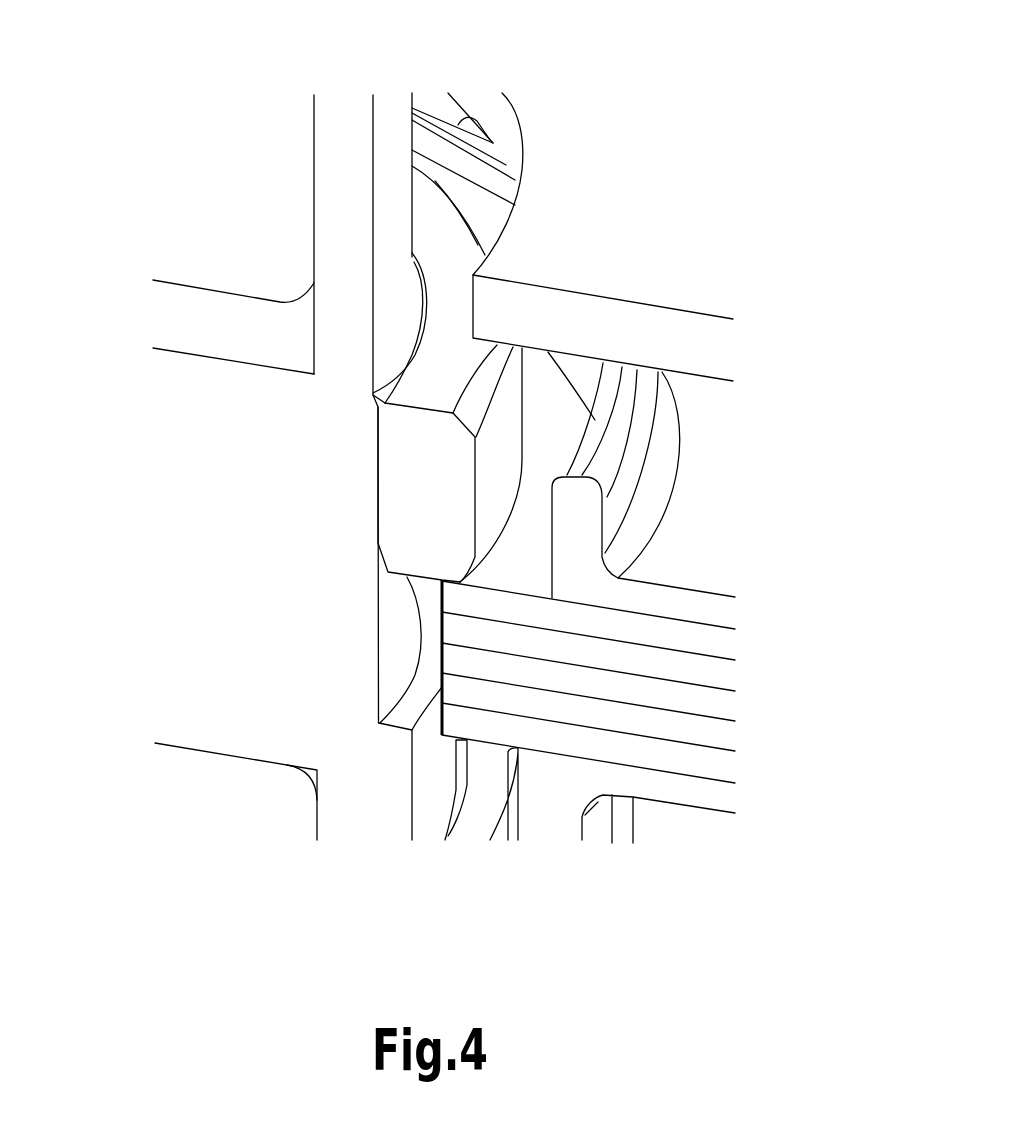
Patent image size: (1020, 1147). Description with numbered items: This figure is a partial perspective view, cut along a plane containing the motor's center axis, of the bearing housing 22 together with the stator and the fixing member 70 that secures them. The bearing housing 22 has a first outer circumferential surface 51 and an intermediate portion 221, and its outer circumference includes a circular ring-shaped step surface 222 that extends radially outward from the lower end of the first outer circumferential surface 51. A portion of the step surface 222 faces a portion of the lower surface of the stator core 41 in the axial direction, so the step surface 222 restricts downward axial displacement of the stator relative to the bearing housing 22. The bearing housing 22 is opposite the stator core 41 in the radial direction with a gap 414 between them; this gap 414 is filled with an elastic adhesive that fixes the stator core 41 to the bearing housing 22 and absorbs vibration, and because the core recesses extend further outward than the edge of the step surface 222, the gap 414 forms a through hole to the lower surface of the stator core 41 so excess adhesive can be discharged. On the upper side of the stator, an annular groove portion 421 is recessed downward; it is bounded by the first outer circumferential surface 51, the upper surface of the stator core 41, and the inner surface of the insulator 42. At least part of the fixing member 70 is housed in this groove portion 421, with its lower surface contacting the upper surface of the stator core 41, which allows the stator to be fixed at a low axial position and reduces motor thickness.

The bearing housing 22 is at (338, 235).
The intermediate portion 221 is at (227, 468).
The step surface 222 is at (415, 710).
The gap 414 is at (358, 606).
The fixing member 70 is at (428, 463).
The insulator 42 is at (707, 540).
The groove portion 421 is at (528, 541).
The stator core 41 is at (622, 692).
The first outer circumferential surface 51 is at (400, 627).